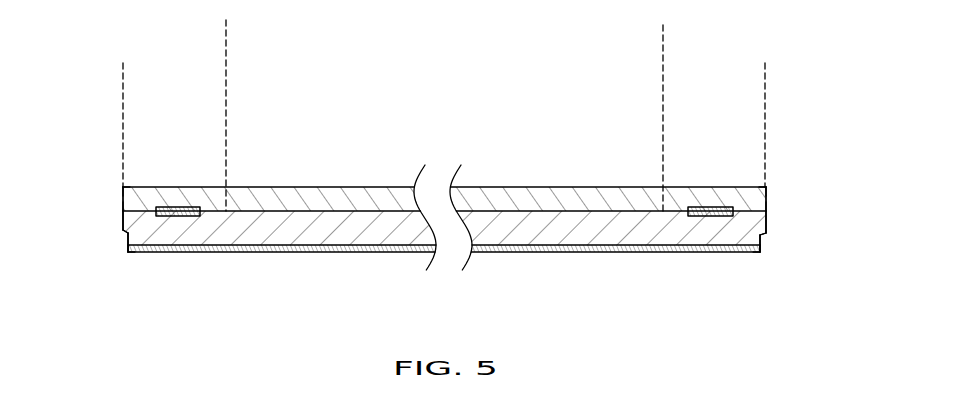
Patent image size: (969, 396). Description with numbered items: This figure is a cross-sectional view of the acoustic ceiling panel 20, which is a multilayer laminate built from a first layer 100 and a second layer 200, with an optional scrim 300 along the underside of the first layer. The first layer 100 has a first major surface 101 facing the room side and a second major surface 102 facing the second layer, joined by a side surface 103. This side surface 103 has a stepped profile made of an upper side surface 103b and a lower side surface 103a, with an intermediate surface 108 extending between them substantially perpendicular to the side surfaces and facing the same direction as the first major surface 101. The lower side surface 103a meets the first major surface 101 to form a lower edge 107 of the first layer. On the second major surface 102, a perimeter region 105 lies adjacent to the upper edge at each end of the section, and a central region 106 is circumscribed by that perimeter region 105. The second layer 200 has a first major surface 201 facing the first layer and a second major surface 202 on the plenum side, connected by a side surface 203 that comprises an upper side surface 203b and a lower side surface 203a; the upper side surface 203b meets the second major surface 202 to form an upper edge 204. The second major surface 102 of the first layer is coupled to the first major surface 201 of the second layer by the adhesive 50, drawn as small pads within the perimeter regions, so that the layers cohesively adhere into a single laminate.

The acoustic ceiling panel 20 is at (794, 81).
The adhesive 50 is at (174, 207).
The first layer 100 is at (281, 238).
The first major surface 101 is at (646, 245).
The second major surface 102 is at (519, 211).
The side surface 103 is at (448, 267).
The lower side surface 103a is at (127, 249).
The upper side surface 103b is at (122, 222).
The perimeter region 105 is at (225, 80).
The central region 106 is at (662, 43).
The lower edge 107 is at (129, 253).
The intermediate surface 108 is at (127, 234).
The second layer 200 is at (286, 201).
The first major surface 201 is at (357, 211).
The second major surface 202 is at (383, 187).
The side surface 203 is at (447, 125).
The lower side surface 203a is at (123, 210).
The upper side surface 203b is at (123, 187).
The upper edge 204 is at (123, 187).
The scrim 300 is at (333, 253).